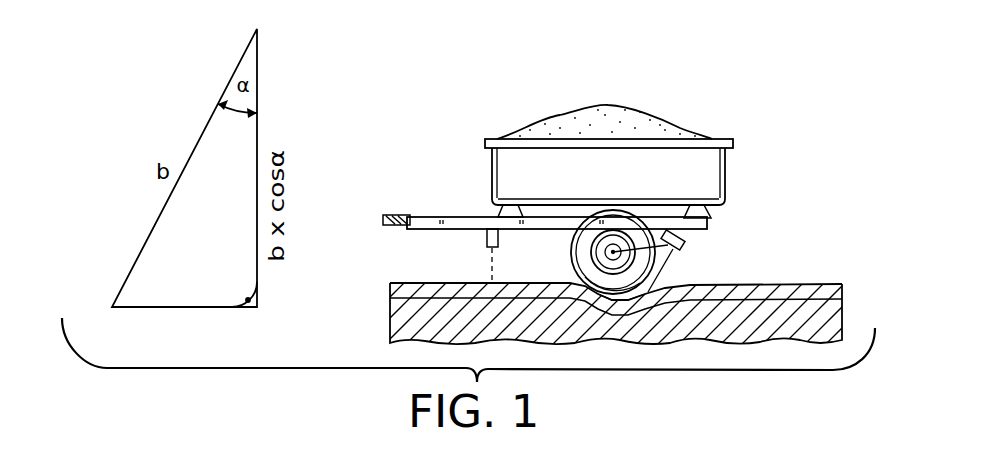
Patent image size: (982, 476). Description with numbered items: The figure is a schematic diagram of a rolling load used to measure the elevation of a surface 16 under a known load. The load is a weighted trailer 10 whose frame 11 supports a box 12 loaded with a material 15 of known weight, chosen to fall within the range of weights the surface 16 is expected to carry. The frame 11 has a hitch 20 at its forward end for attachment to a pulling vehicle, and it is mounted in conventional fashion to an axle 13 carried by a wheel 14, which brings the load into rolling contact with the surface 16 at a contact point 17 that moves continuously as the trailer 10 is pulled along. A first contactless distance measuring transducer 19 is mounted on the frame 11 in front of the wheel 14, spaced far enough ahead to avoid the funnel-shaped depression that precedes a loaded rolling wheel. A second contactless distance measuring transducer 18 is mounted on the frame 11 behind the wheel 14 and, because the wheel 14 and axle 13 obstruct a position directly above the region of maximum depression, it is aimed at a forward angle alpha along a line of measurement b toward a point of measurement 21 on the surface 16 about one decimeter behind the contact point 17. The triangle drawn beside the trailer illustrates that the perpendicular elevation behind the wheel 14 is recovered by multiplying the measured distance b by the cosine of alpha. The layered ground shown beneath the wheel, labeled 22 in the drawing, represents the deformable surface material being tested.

The weighted trailer 10 is at (748, 170).
The frame 11 is at (462, 214).
The box 12 is at (485, 142).
The axle 13 is at (578, 250).
The wheel 14 is at (603, 279).
The material 15 is at (653, 112).
The surface 16 is at (392, 284).
The contact point 17 is at (612, 296).
The second contactless distance measuring transducer 18 is at (683, 243).
The first contactless distance measuring transducer 19 is at (487, 238).
The hitch 20 is at (395, 215).
The point of measurement 21 is at (632, 283).
The ground layer 22 is at (492, 284).